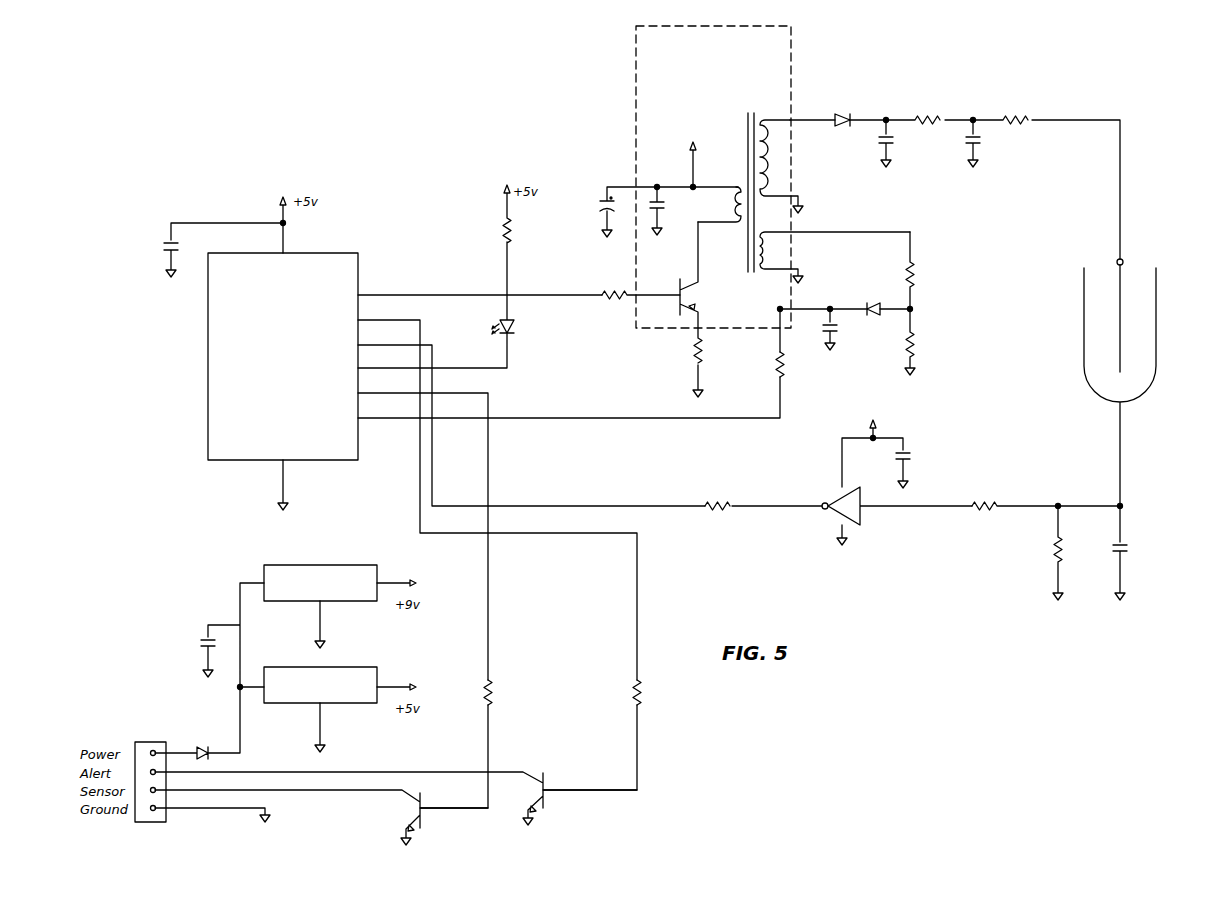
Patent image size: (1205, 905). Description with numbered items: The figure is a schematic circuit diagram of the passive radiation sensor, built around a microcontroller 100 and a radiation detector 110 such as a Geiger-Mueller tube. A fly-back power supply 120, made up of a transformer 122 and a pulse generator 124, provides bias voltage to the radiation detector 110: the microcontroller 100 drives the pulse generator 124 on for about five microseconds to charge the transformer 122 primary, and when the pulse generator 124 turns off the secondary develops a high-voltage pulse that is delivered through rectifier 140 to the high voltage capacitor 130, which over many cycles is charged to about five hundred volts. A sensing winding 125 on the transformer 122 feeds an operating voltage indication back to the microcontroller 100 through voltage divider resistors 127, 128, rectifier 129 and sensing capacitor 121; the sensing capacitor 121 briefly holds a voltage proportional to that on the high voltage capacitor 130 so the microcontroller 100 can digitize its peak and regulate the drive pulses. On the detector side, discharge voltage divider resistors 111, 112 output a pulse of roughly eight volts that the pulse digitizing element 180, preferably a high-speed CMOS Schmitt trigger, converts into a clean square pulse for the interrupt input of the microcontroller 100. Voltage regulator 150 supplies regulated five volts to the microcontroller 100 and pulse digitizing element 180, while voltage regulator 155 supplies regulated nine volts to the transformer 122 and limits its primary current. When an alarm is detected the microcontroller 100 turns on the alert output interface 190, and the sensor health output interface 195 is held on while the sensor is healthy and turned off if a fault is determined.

The microcontroller 100 is at (283, 356).
The radiation detector 110 is at (1158, 347).
The discharge voltage divider resistor 111 is at (988, 497).
The discharge voltage divider resistor 112 is at (1050, 549).
The fly-back power supply 120 is at (755, 211).
The sensing capacitor 121 is at (838, 332).
The transformer 122 is at (748, 110).
The pulse generator 124 is at (705, 300).
The feedback winding 125 is at (780, 247).
The voltage divider resistor 127 is at (924, 277).
The voltage divider resistor 128 is at (921, 343).
The rectifier 129 is at (867, 301).
The high voltage capacitor 130 is at (893, 145).
The rectifier 140 is at (841, 112).
The voltage regulator 150 is at (328, 709).
The voltage regulator 155 is at (340, 606).
The pulse digitizing element 180 is at (862, 527).
The alert output interface 190 is at (556, 812).
The sensor health output interface 195 is at (426, 832).